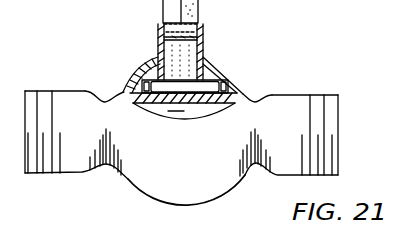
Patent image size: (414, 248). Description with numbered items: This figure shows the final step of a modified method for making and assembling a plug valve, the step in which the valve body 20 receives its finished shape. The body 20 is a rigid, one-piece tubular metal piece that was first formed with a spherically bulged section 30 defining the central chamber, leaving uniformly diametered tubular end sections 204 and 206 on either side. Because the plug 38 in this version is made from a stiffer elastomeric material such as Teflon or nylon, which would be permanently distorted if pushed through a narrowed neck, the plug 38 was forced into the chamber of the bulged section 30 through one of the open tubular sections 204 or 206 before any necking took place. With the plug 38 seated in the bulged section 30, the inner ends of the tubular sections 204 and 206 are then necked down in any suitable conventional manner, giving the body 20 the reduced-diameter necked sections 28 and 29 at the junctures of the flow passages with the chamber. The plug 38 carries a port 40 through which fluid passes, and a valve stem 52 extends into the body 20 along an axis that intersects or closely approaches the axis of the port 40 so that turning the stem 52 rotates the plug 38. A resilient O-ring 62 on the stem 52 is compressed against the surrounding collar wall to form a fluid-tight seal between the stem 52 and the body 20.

The body 20 is at (90, 217).
The tubular end section 204 is at (33, 90).
The tubular end section 206 is at (318, 94).
The necked section 29 is at (107, 100).
The necked section 28 is at (255, 102).
The bulged section 30 is at (224, 194).
The plug 38 is at (237, 88).
The port 40 is at (178, 104).
The valve stem 52 is at (192, 11).
The O-ring 62 is at (200, 40).